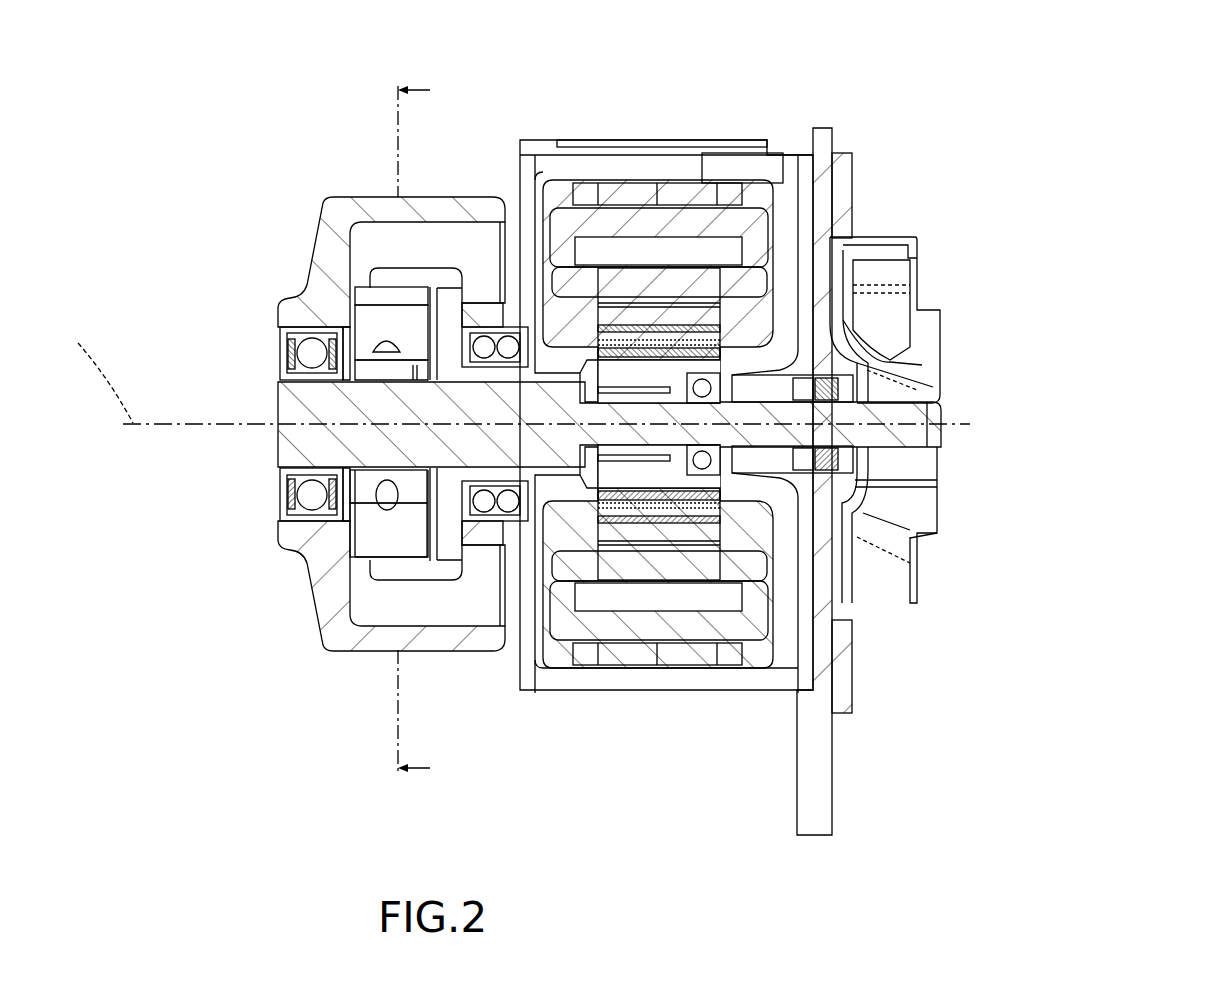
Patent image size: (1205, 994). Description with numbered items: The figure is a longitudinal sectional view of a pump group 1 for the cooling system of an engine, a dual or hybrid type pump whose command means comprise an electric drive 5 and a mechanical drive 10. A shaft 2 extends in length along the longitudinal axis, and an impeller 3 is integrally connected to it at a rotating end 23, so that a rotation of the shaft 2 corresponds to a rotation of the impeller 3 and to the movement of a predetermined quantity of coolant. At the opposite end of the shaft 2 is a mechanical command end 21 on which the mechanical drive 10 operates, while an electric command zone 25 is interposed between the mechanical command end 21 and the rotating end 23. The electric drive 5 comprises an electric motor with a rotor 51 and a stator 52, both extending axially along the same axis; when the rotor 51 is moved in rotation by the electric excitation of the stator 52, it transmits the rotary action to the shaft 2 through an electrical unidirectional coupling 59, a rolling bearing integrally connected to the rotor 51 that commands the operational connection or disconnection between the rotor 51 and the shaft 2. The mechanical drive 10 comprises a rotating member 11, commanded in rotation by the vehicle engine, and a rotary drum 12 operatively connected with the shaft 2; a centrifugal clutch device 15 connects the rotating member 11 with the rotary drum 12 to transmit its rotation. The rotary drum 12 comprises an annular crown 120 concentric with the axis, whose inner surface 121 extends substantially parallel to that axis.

The pump group 1 is at (623, 456).
The shaft 2 is at (953, 405).
The impeller 3 is at (972, 438).
The electric drive 5 is at (744, 513).
The mechanical drive 10 is at (636, 456).
The rotating member 11 is at (333, 245).
The rotary drum 12 is at (351, 316).
The centrifugal clutch device 15 is at (374, 318).
The mechanical command end 21 is at (636, 457).
The rotating end 23 is at (927, 414).
The electric command zone 25 is at (692, 413).
The rotor 51 is at (677, 530).
The stator 52 is at (633, 625).
The electrical unidirectional coupling 59 is at (623, 470).
The annular crown 120 is at (410, 277).
The inner surface 121 is at (388, 291).